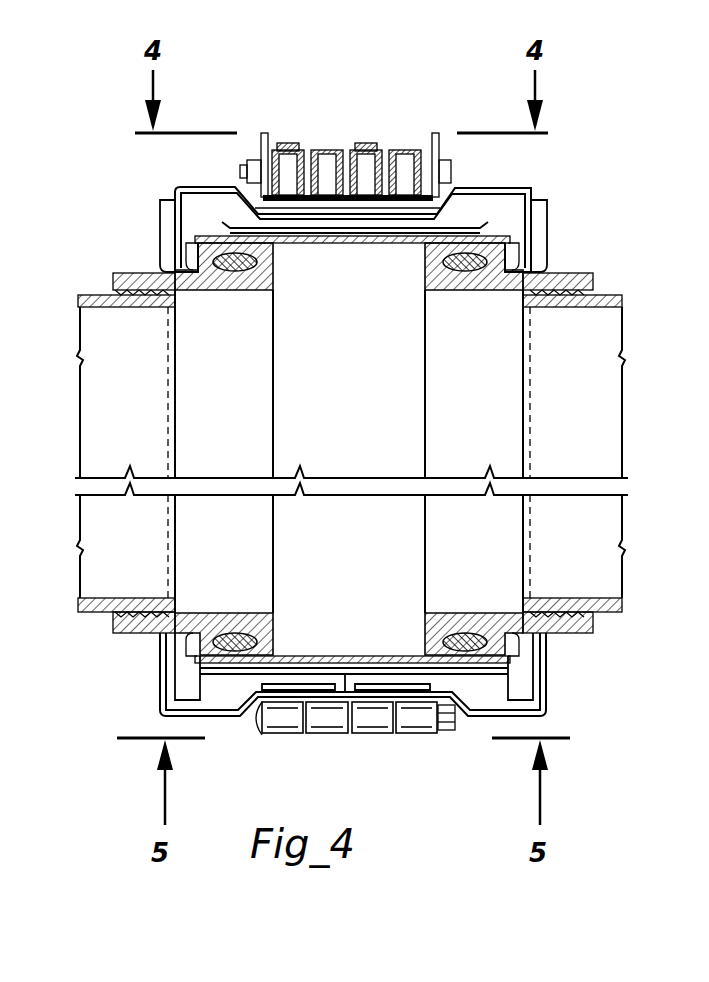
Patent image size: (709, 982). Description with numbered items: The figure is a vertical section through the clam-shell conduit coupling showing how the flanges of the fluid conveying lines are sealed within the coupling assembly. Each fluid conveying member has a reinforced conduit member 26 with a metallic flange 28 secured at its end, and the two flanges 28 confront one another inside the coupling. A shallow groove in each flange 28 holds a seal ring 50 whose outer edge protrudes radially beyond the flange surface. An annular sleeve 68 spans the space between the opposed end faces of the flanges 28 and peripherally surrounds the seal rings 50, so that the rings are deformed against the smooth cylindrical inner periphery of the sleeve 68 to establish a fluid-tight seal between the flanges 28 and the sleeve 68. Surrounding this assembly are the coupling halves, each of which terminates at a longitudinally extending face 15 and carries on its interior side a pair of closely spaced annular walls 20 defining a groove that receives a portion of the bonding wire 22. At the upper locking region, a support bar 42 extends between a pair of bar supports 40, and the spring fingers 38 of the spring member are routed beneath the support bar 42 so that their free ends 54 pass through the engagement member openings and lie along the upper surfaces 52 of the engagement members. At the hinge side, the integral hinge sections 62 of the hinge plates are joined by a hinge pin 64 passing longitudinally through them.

The longitudinally extending face 15 is at (170, 215).
The annular walls 20 is at (186, 252).
The bonding wire 22 is at (192, 188).
The reinforced conduit member 26 is at (115, 290).
The metallic flange 28 is at (255, 305).
The spring fingers 38 is at (407, 178).
The bar supports 40 is at (264, 133).
The support bar 42 is at (248, 168).
The seal ring 50 is at (262, 272).
The upper surfaces 52 is at (327, 150).
The free ends 54 is at (288, 143).
The hinge sections 62 is at (283, 725).
The hinge pin 64 is at (255, 722).
The sleeve 68 is at (349, 451).